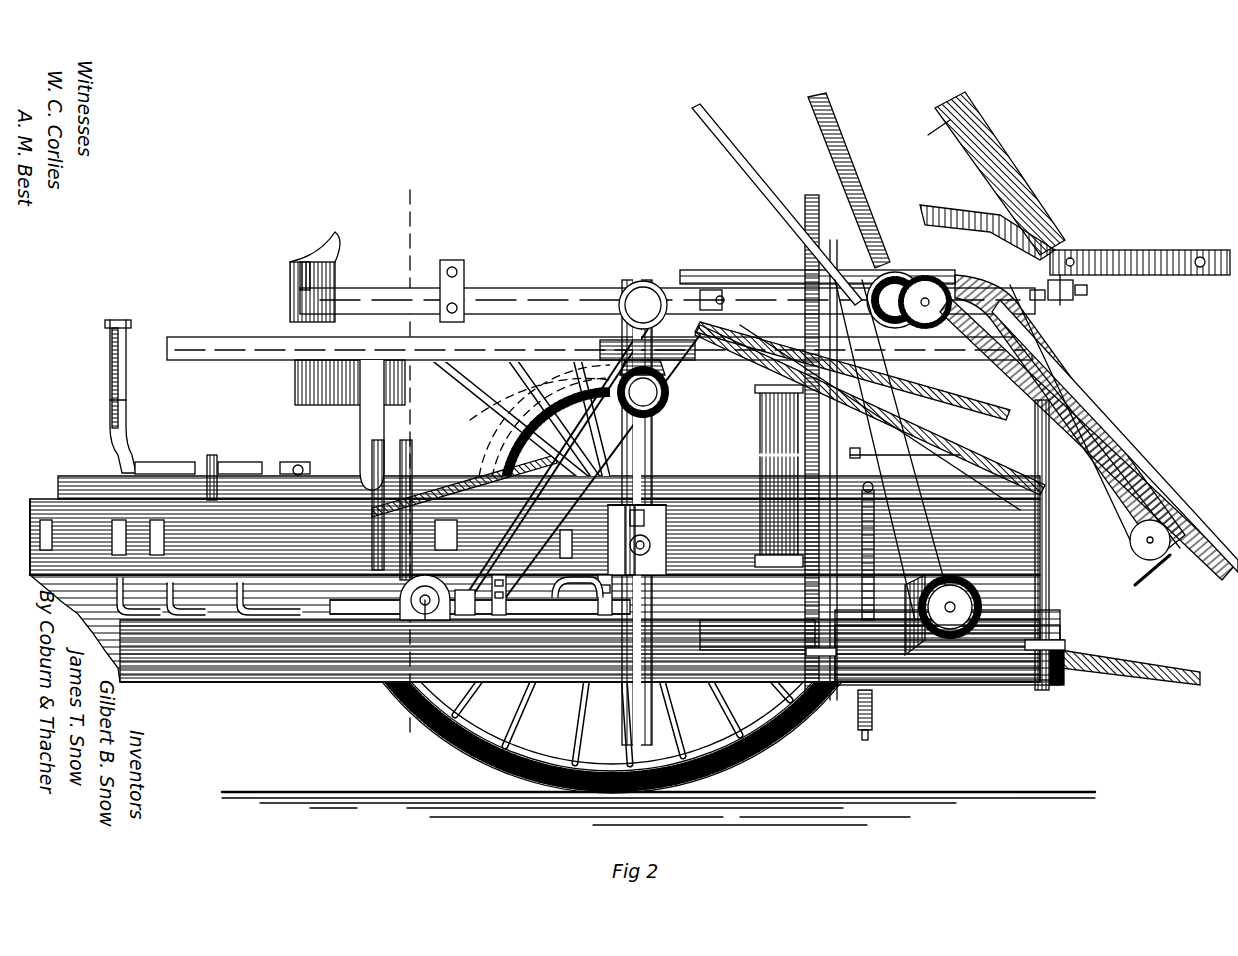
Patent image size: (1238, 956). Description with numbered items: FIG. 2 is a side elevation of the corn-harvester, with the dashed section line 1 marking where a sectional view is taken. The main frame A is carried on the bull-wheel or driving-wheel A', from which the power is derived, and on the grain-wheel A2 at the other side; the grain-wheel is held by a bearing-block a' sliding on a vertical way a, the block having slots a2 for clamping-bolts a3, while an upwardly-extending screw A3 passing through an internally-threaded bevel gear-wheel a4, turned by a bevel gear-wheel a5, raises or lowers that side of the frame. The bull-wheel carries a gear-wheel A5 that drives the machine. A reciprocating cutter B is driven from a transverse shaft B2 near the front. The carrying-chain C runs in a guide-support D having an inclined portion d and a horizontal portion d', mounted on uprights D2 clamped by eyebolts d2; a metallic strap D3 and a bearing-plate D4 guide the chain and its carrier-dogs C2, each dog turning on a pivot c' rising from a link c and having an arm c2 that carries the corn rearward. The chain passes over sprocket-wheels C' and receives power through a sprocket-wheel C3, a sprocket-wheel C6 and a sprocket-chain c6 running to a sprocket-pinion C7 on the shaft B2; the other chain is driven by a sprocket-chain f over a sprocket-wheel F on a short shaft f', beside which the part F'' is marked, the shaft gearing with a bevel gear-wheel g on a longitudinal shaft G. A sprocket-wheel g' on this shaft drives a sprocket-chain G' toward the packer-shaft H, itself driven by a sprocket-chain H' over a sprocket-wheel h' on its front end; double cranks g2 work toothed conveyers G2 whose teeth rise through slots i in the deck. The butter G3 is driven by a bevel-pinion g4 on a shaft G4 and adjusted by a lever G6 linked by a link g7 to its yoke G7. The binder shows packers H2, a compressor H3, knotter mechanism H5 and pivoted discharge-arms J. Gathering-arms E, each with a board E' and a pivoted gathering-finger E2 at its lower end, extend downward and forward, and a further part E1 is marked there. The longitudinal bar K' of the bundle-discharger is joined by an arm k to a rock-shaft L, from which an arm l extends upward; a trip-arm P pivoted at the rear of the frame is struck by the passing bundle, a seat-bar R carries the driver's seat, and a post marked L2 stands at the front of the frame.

The section line 1 is at (372, 459).
The main frame A is at (545, 580).
The bull-wheel A' is at (612, 500).
The grain-wheel A2 is at (790, 740).
The screw A3 is at (645, 290).
The gear-wheel A5 is at (535, 420).
The cutter B is at (815, 710).
The transverse shaft B2 is at (985, 640).
The carrying-chain C is at (935, 412).
The sprocket-wheels C' is at (1075, 417).
The carrier-dogs C2 is at (1150, 575).
The sprocket-wheel C3 is at (628, 285).
The sprocket-wheel C6 is at (905, 288).
The sprocket-pinion C7 is at (965, 630).
The guide-support D is at (1070, 415).
The uprights D2 is at (832, 370).
The metallic strap D3 is at (1110, 660).
The bearing-plate D4 is at (712, 275).
The gathering-arm E is at (996, 173).
The board E' is at (1087, 439).
The rod E1 is at (1115, 436).
The gathering-finger E2 is at (1110, 254).
The sprocket-wheel F is at (406, 653).
The bearing F'' is at (461, 622).
The longitudinal shaft G is at (456, 629).
The sprocket-chain G' is at (554, 563).
The toothed conveyers G2 is at (118, 535).
The butter G3 is at (690, 360).
The shaft G4 is at (720, 650).
The lever G6 is at (848, 175).
The yoke G7 is at (905, 465).
The packer-shaft H is at (895, 598).
The sprocket-chain H' is at (886, 716).
The packers H2 is at (405, 470).
The compressor H3 is at (392, 460).
The knotter mechanism H5 is at (599, 371).
The discharge-arms J is at (375, 276).
The longitudinal bar K' is at (251, 449).
The rock-shaft L is at (40, 530).
The post L2 is at (106, 396).
The trip-arm P is at (216, 470).
The seat-bar R is at (777, 204).
The vertical way a is at (637, 512).
The bearing-block a' is at (637, 543).
The slots a2 is at (645, 510).
The clamping-bolts a3 is at (650, 540).
The bevel gear-wheel a4 is at (662, 390).
The bevel gear-wheel a5 is at (657, 388).
The links c is at (1089, 287).
The pivot c' is at (1063, 300).
The arm c2 is at (1065, 300).
The sprocket-chain c6 is at (948, 630).
The inclined portion d is at (1082, 434).
The horizontal portion d' is at (743, 296).
The eyebolts d2 is at (1060, 640).
The sprocket-chain f is at (577, 456).
The short shaft f' is at (421, 626).
The bevel gear-wheel g is at (479, 574).
The sprocket-wheel g' is at (555, 615).
The double cranks g2 is at (185, 618).
The bevel-pinion g4 is at (748, 575).
The link g7 is at (895, 450).
The sprocket-wheel h' is at (872, 751).
The slots i is at (42, 530).
The arm k is at (300, 468).
The arm l is at (128, 380).